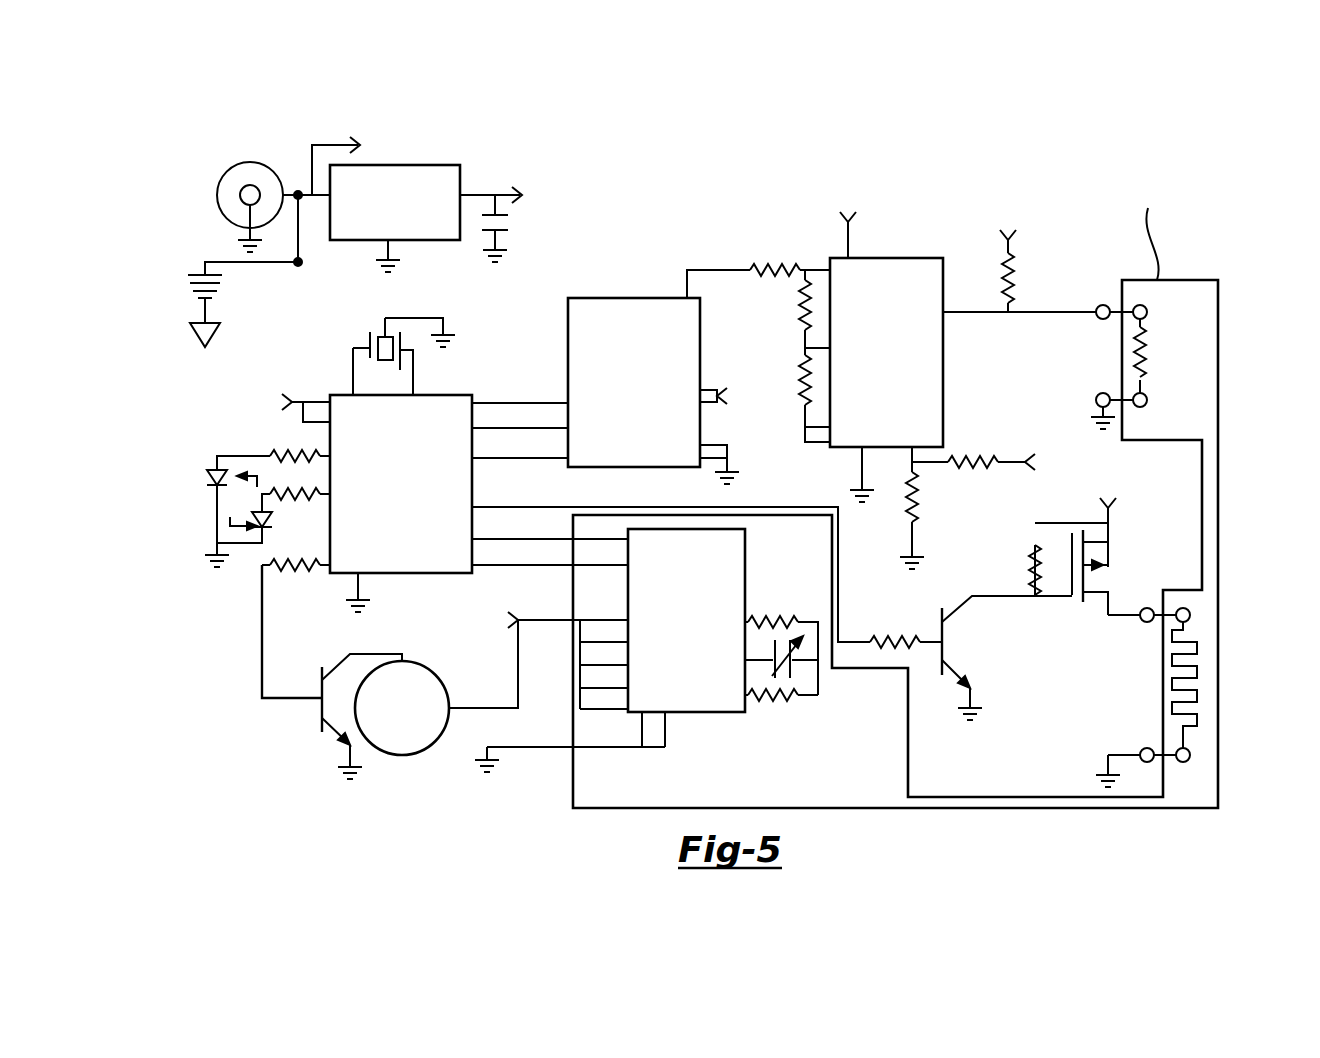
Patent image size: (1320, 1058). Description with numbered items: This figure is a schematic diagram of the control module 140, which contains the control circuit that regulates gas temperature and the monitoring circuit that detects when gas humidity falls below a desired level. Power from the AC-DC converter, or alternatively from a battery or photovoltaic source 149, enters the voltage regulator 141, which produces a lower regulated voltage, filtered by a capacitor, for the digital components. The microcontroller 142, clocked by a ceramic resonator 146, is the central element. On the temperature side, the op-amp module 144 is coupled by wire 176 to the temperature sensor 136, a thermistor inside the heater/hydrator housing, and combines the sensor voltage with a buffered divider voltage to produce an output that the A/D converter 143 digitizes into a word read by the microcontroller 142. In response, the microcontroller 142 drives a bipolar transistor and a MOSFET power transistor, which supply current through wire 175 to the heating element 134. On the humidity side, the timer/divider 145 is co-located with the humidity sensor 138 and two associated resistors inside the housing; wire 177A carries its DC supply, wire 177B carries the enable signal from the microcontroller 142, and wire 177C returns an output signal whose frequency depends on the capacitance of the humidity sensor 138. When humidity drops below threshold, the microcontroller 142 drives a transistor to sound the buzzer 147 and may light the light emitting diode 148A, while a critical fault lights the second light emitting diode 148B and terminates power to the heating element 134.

The control module 140 is at (692, 165).
The voltage regulator 141 is at (430, 166).
The microcontroller 142 is at (412, 575).
The A/D converter 143 is at (616, 298).
The op-amp module 144 is at (900, 258).
The timer/divider 145 is at (727, 713).
The ceramic resonator 146 is at (369, 340).
The buzzer 147 is at (405, 756).
The light emitting diode 148A is at (273, 518).
The light emitting diode 148B is at (205, 478).
The battery or photovoltaic source 149 is at (187, 290).
The heating element 134 is at (1215, 678).
The temperature sensor 136 is at (1175, 364).
The humidity sensor 138 is at (792, 662).
The wire 175 is at (1112, 622).
The wire 176 is at (1068, 308).
The wire 177A is at (522, 622).
The wire 177B is at (593, 537).
The wire 177C is at (494, 568).